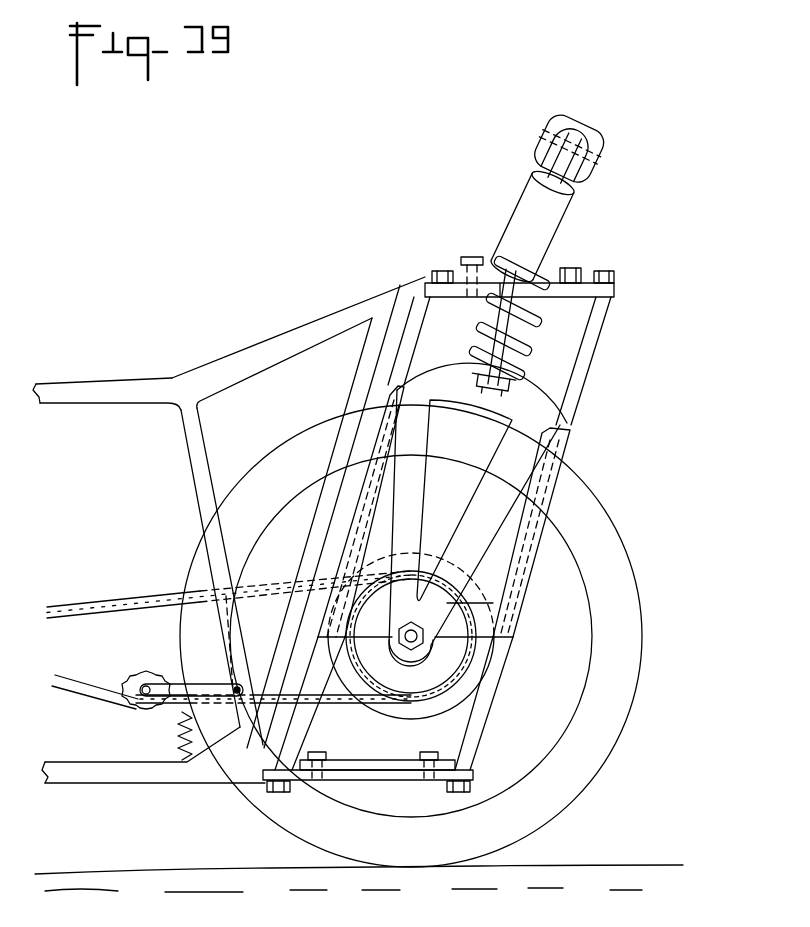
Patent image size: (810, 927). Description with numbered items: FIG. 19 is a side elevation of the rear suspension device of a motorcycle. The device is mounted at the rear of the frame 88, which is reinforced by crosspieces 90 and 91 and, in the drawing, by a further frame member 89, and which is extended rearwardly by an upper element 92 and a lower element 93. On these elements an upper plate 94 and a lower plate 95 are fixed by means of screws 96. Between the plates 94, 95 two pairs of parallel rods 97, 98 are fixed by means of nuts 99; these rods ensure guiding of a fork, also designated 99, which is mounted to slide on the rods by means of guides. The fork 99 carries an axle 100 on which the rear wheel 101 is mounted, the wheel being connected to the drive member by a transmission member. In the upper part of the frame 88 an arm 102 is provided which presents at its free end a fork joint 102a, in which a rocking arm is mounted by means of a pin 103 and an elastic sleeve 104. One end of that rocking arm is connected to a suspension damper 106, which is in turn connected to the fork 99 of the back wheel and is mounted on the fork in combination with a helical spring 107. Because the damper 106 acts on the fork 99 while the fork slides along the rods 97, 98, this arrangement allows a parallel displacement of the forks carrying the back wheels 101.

The frame 88 is at (80, 391).
The frame down member 89 is at (197, 467).
The crosspiece 90 is at (343, 442).
The crosspiece 91 is at (304, 337).
The upper element 92 is at (578, 275).
The lower element 93 is at (386, 768).
The plate 94 is at (590, 287).
The plate 95 is at (348, 790).
The screw 96 is at (470, 258).
The parallel rod 97 is at (577, 372).
The parallel rod 98 is at (415, 315).
The nut / fork 99 is at (612, 281).
The axle 100 is at (432, 648).
The rear wheel 101 is at (597, 747).
The arm 102 is at (560, 232).
The fork joint 102a is at (592, 157).
The pin 103 is at (560, 130).
The elastic sleeve 104 is at (566, 148).
The suspension damper 106 is at (540, 205).
The helical spring 107 is at (538, 325).